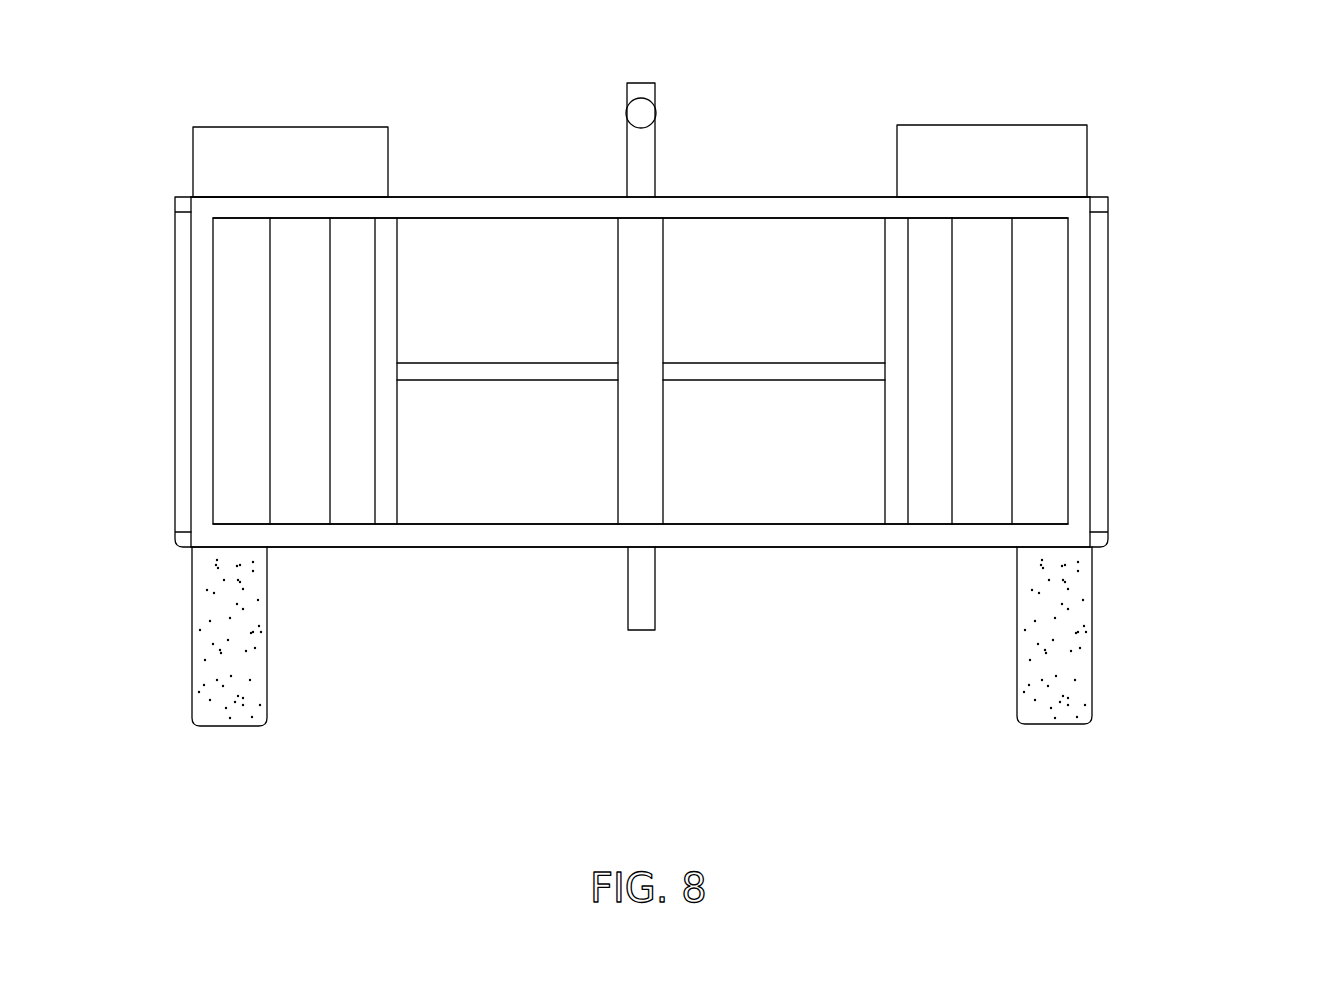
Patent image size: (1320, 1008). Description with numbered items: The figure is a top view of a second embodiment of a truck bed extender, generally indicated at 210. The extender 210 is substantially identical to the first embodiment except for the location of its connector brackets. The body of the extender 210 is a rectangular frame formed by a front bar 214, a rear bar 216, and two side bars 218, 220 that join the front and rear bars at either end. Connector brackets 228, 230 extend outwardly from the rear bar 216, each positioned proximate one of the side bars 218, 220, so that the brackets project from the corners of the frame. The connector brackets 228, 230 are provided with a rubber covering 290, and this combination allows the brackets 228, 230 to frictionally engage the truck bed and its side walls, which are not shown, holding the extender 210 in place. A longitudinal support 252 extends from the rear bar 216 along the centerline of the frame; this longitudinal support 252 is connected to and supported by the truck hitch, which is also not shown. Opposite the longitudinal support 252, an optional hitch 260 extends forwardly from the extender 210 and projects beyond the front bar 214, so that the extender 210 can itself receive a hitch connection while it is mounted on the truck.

The extender 210 is at (705, 404).
The front bar 214 is at (512, 208).
The rear bar 216 is at (445, 532).
The side bar 218 is at (1078, 392).
The side bar 220 is at (203, 368).
The connector bracket 228 is at (1092, 673).
The connector bracket 230 is at (267, 672).
The longitudinal support 252 is at (642, 589).
The optional hitch 260 is at (642, 155).
The rubber covering 290 is at (203, 635).